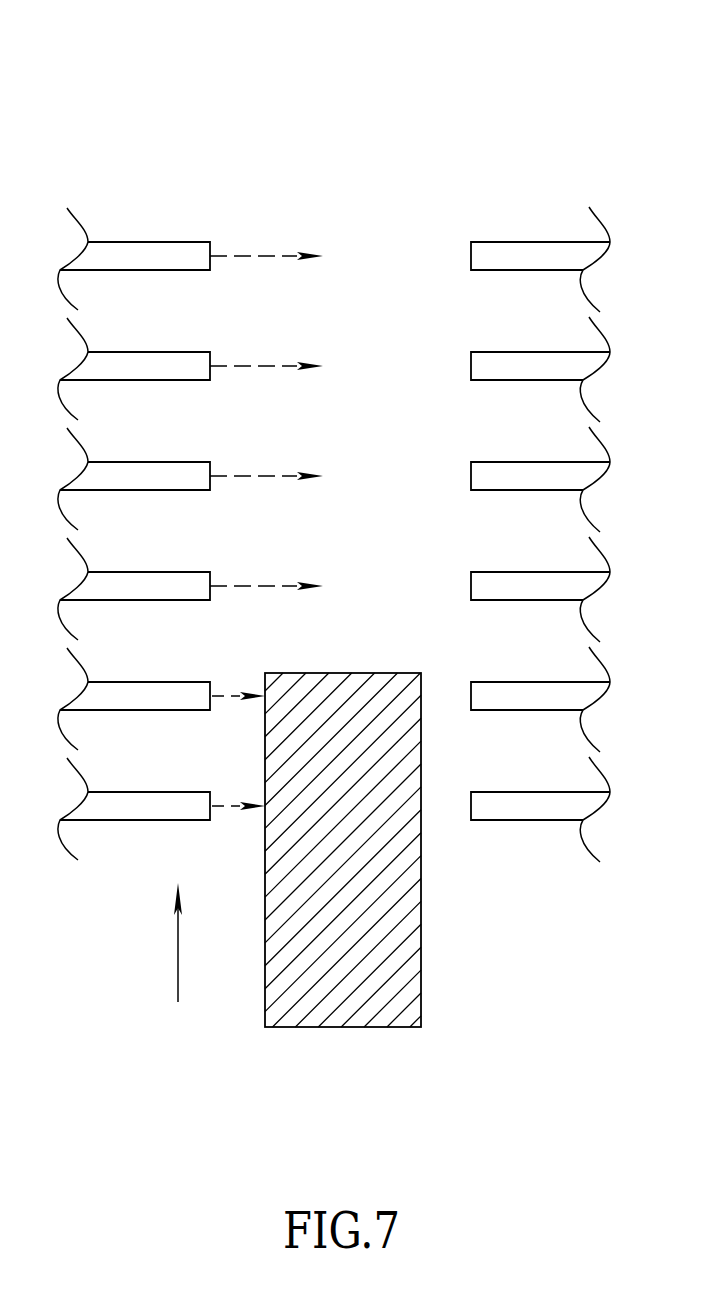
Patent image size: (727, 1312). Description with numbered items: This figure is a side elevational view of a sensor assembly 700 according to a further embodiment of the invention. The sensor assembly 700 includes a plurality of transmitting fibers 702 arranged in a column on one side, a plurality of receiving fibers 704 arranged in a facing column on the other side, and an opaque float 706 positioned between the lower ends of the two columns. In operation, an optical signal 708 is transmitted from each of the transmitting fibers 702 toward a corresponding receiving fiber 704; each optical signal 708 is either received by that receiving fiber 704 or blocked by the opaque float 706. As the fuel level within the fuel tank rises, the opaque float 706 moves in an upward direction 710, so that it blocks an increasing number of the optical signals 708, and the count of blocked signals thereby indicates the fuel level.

The sensor assembly 700 is at (470, 80).
The transmitting fibers 702 is at (130, 242).
The receiving fibers 704 is at (550, 242).
The opaque float 706 is at (422, 947).
The optical signal 708 is at (253, 255).
The upward direction 710 is at (178, 950).